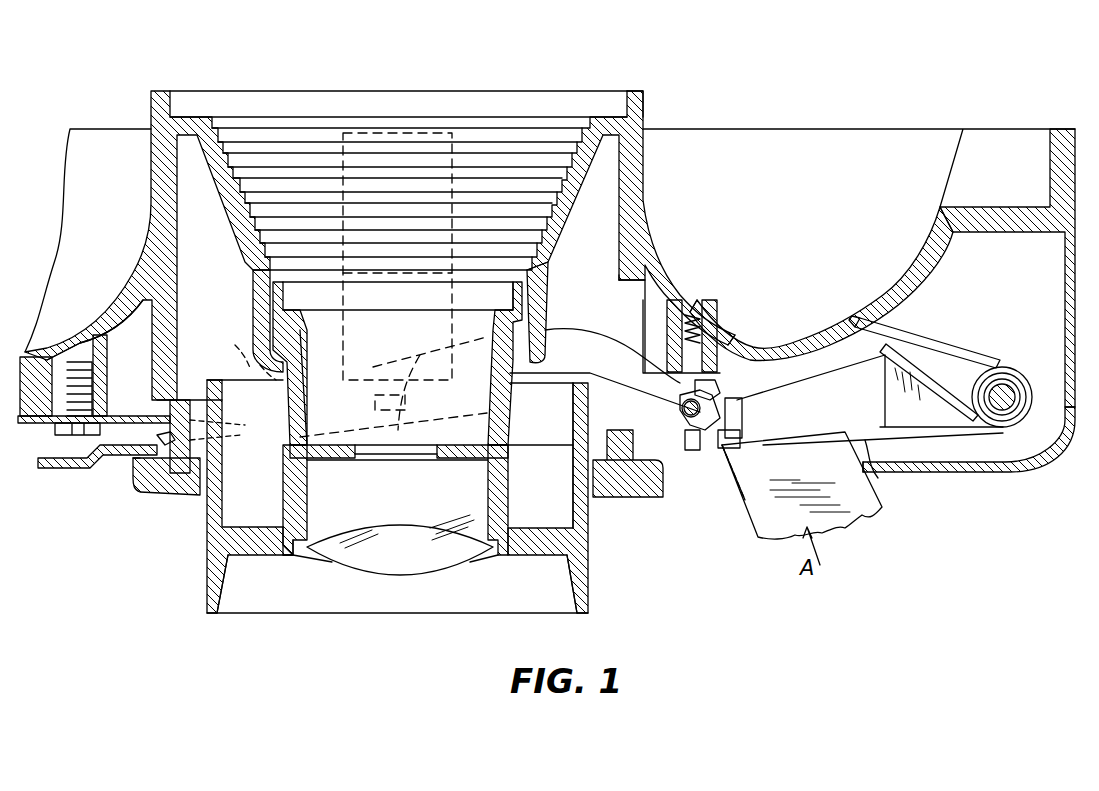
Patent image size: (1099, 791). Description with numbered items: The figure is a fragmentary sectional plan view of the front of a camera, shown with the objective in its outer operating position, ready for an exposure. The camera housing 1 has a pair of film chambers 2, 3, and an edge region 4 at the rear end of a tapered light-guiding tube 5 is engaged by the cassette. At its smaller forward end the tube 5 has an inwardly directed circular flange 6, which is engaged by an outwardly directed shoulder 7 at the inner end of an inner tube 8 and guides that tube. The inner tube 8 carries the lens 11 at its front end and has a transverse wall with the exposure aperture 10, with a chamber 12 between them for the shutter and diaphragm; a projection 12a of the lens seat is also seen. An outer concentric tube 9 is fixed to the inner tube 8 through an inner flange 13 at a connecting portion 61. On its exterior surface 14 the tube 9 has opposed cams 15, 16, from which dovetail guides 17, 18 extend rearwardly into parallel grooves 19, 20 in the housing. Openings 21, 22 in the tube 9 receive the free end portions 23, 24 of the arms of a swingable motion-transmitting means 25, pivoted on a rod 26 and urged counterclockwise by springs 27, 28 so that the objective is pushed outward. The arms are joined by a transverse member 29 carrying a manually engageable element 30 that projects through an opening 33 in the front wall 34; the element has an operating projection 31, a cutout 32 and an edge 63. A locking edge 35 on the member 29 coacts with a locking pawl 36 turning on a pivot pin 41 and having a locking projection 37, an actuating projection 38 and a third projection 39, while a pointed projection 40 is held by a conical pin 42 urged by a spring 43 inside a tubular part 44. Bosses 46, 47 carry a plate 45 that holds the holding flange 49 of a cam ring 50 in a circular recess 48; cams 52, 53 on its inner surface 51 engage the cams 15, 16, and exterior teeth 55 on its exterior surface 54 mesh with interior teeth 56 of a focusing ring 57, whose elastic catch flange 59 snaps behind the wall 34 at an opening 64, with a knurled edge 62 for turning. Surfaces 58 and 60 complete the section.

The camera housing 1 is at (640, 205).
The chamber 2 is at (778, 135).
The chamber 3 is at (104, 148).
The edge region 4 is at (638, 96).
The tapered light-guiding tube 5 is at (603, 125).
The inwardly directed circular flange 6 is at (290, 340).
The outwardly directed shoulder 7 is at (310, 322).
The inner tube 8 is at (300, 498).
The outer concentric tube 9 is at (207, 577).
The exposure aperture 10 is at (372, 460).
The lens 11 is at (337, 553).
The chamber 12 is at (463, 540).
The lens seat projection 12a is at (278, 545).
The inner flange 13 is at (248, 552).
The exterior surface 14 is at (205, 392).
The cam 15 is at (234, 349).
The cam 16 is at (234, 349).
The dovetail guide 17 is at (236, 315).
The dovetail guide 18 is at (262, 282).
The groove 19 is at (402, 221).
The groove 20 is at (378, 133).
The opening 21 is at (397, 469).
The opening 22 is at (400, 450).
The free end portion 23 is at (393, 355).
The free end portion 24 is at (393, 355).
The motion-transmitting means 25 is at (548, 340).
The rod 26 is at (1008, 386).
The spring 27 is at (924, 353).
The spring 28 is at (930, 345).
The transverse member 29 is at (775, 414).
The manually engageable element 30 is at (850, 510).
The operating projection 31 is at (742, 400).
The cutout 32 is at (738, 455).
The opening 33 is at (870, 485).
The front wall 34 is at (1002, 475).
The locking edge 35 is at (718, 395).
The locking pawl 36 is at (681, 402).
The locking projection 37 is at (735, 345).
The actuating projection 38 is at (705, 345).
The projection 39 is at (705, 450).
The pointed projection 40 is at (660, 383).
The pivot pin 41 is at (670, 470).
The pin 42 is at (660, 320).
The spring 43 is at (692, 305).
The tubular part 44 is at (620, 295).
The plate 45 is at (135, 416).
The boss 46 is at (95, 317).
The boss 47 is at (80, 330).
The circular recess 48 is at (138, 382).
The holding flange 49 is at (205, 410).
The cam ring 50 is at (215, 438).
The inner surface 51 is at (233, 447).
The cam 52 is at (546, 486).
The cam 53 is at (555, 448).
The exterior surface 54 is at (137, 511).
The exterior teeth 55 is at (178, 488).
The interior teeth 56 is at (172, 445).
The focusing ring 57 is at (605, 495).
The block 58 is at (165, 505).
The elastic catch flange 59 is at (150, 465).
The wall surface 60 is at (300, 375).
The connecting portion 61 is at (532, 553).
The knurled circumferential edge 62 is at (130, 462).
The edge 63 is at (742, 488).
The opening 64 is at (580, 398).